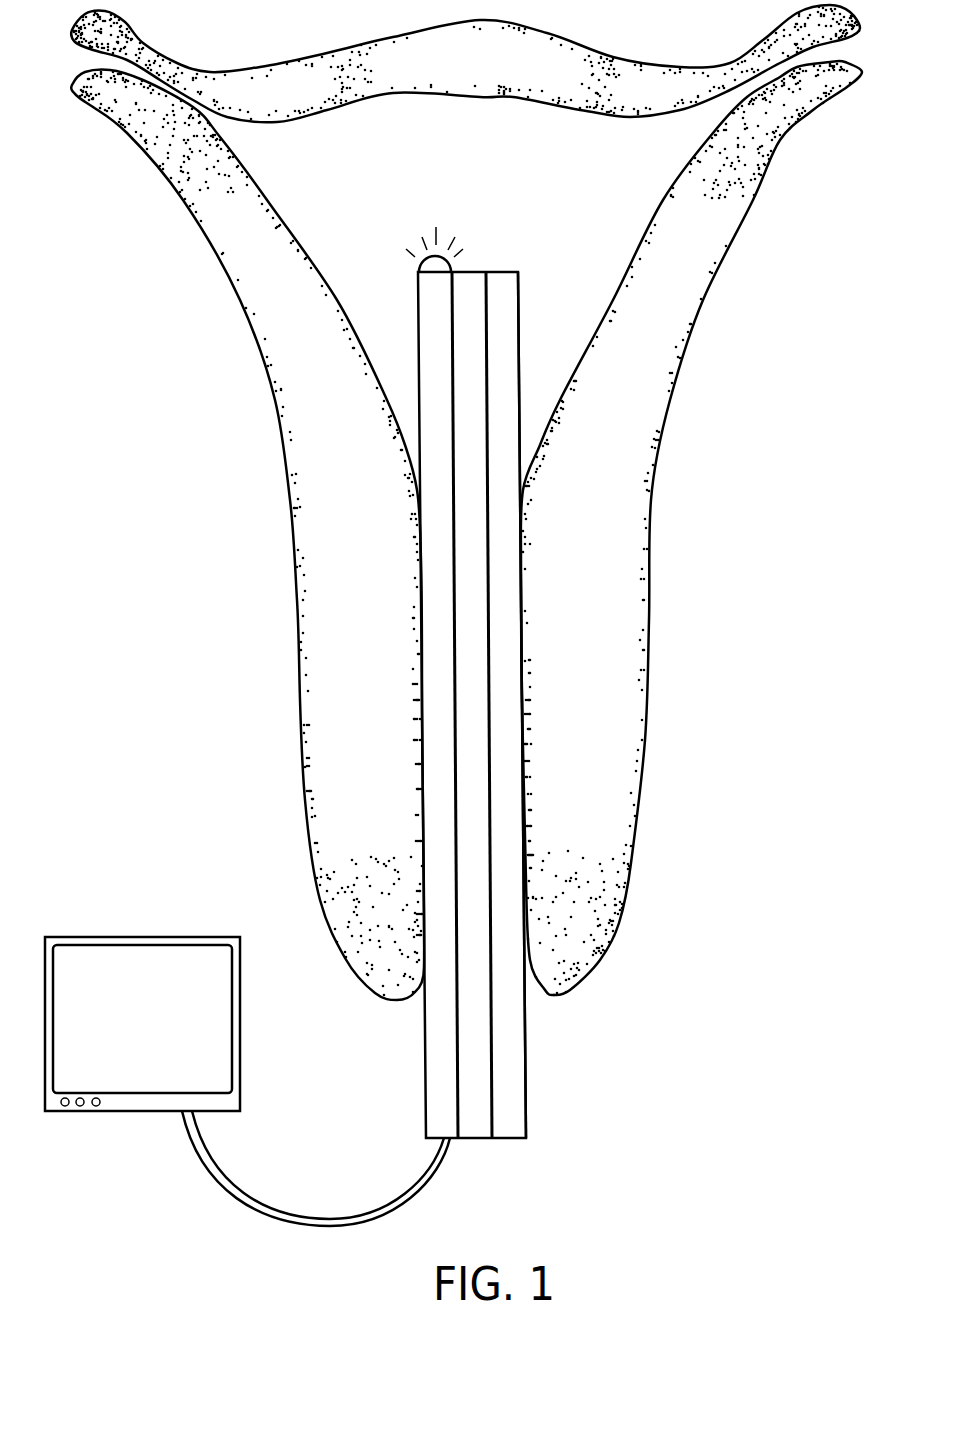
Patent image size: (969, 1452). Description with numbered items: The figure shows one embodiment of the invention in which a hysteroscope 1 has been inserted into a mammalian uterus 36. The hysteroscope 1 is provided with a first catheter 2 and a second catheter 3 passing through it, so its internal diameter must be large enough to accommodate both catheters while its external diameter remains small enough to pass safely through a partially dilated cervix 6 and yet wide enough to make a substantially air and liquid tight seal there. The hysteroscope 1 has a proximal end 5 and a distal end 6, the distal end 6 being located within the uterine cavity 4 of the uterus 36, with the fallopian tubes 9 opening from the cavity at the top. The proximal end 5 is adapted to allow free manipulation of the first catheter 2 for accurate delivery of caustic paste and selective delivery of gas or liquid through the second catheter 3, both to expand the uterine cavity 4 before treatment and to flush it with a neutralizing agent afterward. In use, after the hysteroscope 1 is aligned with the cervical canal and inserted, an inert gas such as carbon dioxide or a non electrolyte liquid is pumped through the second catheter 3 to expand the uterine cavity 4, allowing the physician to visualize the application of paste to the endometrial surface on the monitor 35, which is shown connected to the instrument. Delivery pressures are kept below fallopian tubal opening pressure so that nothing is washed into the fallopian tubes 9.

The hysteroscope 1 is at (471, 727).
The first catheter 2 is at (503, 1140).
The second catheter 3 is at (470, 1140).
The uterine cavity 4 is at (484, 177).
The proximal end 5 is at (526, 1130).
The distal end 6 is at (518, 272).
The fallopian tubes 9 is at (204, 117).
The monitor 35 is at (240, 1033).
The mammalian uterus 36 is at (467, 500).